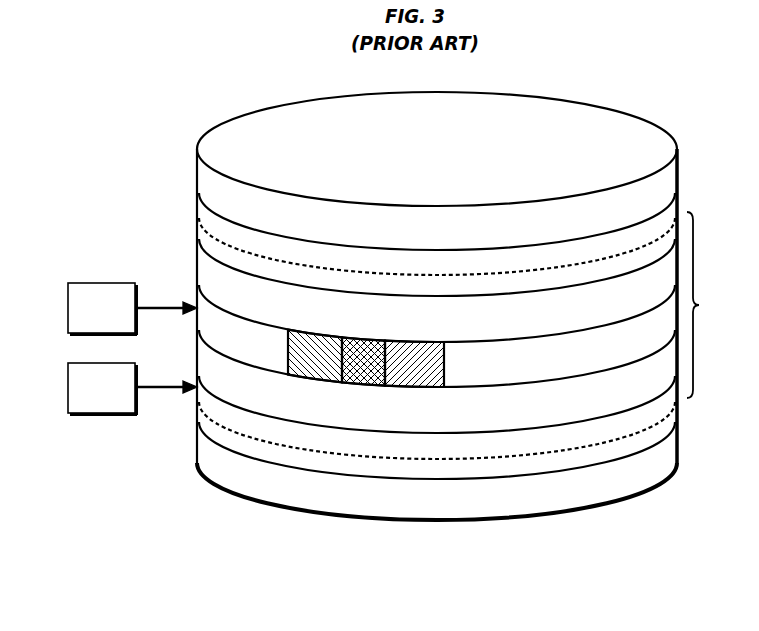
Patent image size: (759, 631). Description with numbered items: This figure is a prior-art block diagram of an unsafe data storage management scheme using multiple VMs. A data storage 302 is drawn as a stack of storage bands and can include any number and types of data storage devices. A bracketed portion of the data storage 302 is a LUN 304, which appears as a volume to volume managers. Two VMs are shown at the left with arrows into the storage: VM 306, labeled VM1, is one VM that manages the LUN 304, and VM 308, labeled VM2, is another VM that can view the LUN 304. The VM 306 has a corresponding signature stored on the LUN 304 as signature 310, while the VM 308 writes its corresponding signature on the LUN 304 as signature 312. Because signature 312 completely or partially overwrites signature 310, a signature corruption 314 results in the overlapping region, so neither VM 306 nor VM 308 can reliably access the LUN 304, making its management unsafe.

The data storage 302 is at (425, 178).
The LUN 304 is at (707, 318).
The VM 306 is at (89, 323).
The VM 308 is at (89, 403).
The signature 310 is at (318, 372).
The signature 312 is at (417, 380).
The signature corruption 314 is at (362, 352).